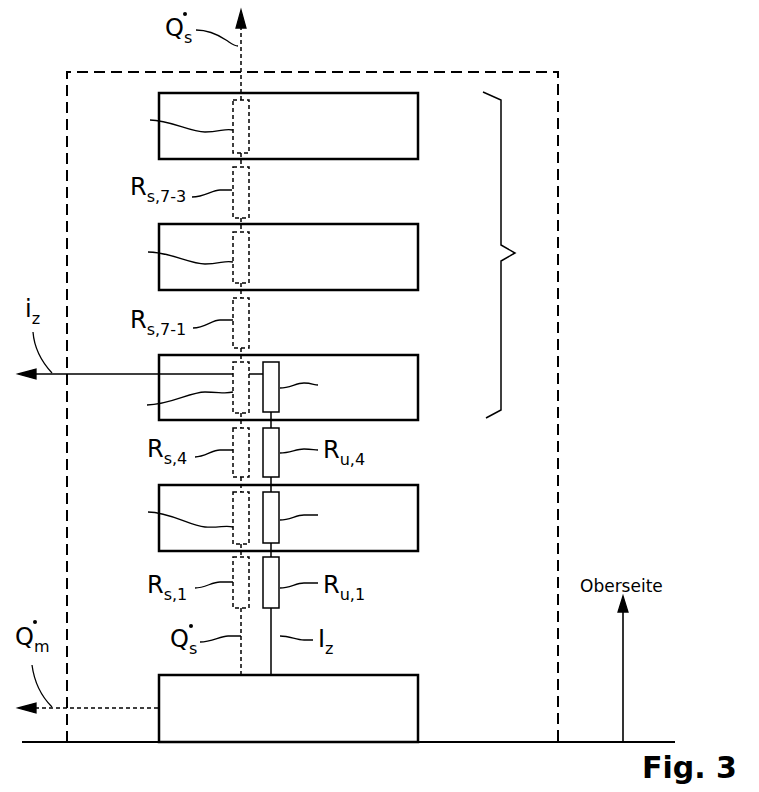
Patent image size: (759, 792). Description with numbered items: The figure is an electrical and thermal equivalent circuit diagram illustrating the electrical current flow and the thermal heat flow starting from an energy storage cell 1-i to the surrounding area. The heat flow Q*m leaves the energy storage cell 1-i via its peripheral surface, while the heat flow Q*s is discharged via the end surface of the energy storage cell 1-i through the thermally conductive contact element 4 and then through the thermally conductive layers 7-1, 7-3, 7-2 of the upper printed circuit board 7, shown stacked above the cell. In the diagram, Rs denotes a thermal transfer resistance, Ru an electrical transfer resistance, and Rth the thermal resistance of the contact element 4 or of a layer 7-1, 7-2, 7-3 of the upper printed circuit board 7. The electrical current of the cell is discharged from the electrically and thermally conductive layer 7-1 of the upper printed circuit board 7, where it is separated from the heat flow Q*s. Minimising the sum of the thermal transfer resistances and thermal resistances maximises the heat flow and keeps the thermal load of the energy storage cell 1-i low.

The thermally conductive layer 7-2 is at (418, 128).
The thermally conductive layer 7-3 is at (418, 258).
The electrically and thermally conductive layer 7-1 is at (418, 388).
The upper printed circuit board 7 is at (510, 255).
The thermally conductive contact element 4 is at (418, 518).
The energy storage cell 1-i is at (418, 707).